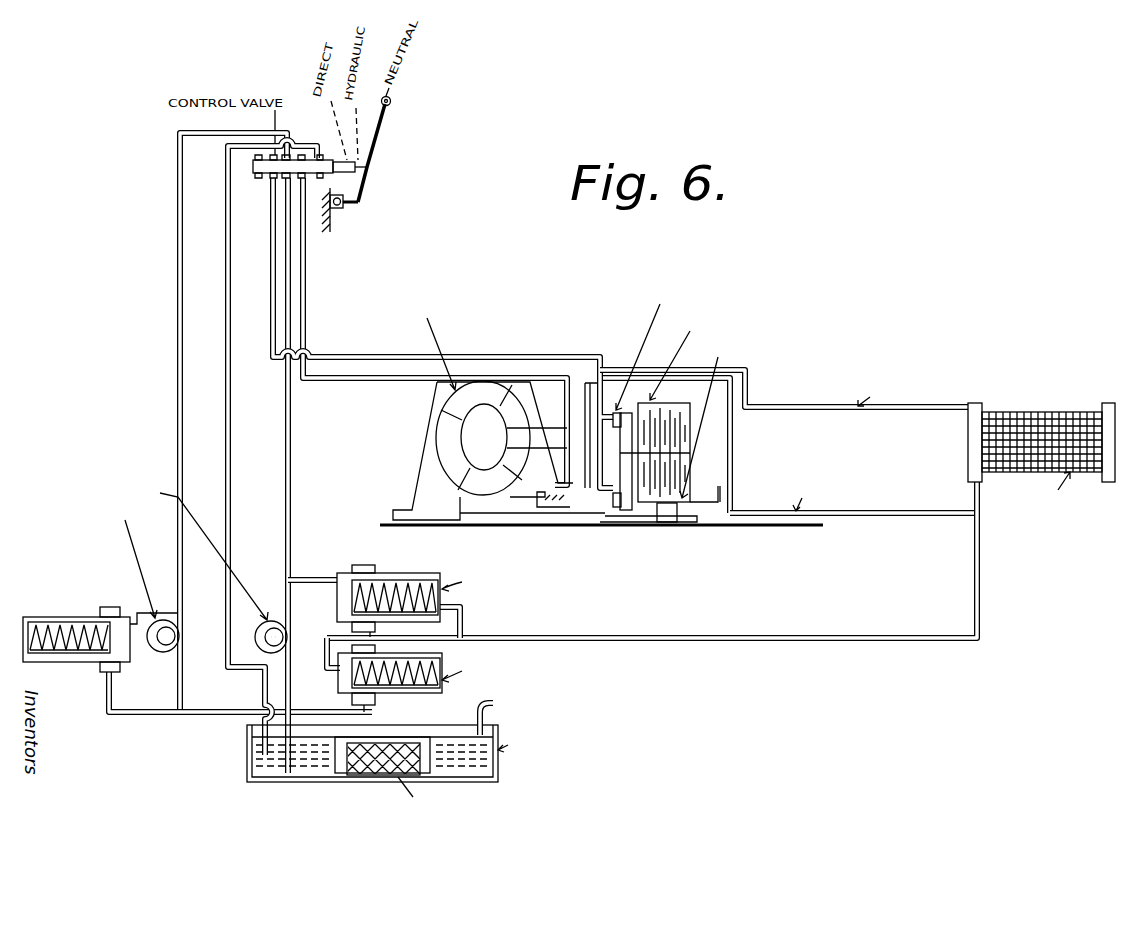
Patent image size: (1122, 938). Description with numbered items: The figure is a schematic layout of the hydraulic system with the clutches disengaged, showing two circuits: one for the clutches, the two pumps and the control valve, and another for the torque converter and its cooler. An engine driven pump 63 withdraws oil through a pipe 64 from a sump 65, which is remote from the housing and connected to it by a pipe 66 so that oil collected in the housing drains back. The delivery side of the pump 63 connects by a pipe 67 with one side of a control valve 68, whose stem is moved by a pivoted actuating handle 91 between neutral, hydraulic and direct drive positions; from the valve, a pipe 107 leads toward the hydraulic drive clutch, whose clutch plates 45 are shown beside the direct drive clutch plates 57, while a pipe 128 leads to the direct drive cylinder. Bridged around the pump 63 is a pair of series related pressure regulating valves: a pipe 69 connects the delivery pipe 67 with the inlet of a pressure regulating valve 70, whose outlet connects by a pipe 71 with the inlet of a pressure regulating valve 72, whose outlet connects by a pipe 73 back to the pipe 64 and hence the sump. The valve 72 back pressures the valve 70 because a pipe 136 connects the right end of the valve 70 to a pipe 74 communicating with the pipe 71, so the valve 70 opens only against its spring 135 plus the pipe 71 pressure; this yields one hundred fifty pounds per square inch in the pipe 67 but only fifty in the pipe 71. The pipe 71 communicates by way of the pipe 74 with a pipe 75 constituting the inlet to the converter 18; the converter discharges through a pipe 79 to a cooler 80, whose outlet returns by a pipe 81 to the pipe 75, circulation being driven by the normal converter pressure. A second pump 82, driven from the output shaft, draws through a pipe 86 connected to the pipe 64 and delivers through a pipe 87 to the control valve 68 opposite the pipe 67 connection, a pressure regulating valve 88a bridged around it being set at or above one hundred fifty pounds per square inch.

The hydraulic torque converter 18 is at (470, 385).
The clutch plates 45 is at (660, 405).
The clutch plates 57 is at (662, 504).
The engine driven pump 63 is at (273, 620).
The pipe 64 is at (291, 700).
The sump 65 is at (250, 766).
The pipe 66 is at (494, 706).
The delivery pipe 67 is at (293, 505).
The control valve 68 is at (258, 176).
The pipe 69 is at (303, 578).
The pressure regulating valve 70 is at (397, 572).
The pipe 71 is at (327, 640).
The pressure regulating valve 72 is at (428, 694).
The pipe 73 is at (375, 707).
The pipe 74 is at (692, 637).
The pipe 75 is at (850, 517).
The pipe 79 is at (750, 383).
The cooler 80 is at (1107, 403).
The pipe 81 is at (979, 514).
The second pump 82 is at (160, 653).
The pipe 86 is at (226, 683).
The pipe 87 is at (177, 402).
The pressure regulating valve 88a is at (85, 664).
The actuating handle 91 is at (381, 145).
The pipe 107 is at (406, 355).
The pipe 128 is at (306, 276).
The spring 135 is at (441, 582).
The pipe 136 is at (462, 622).